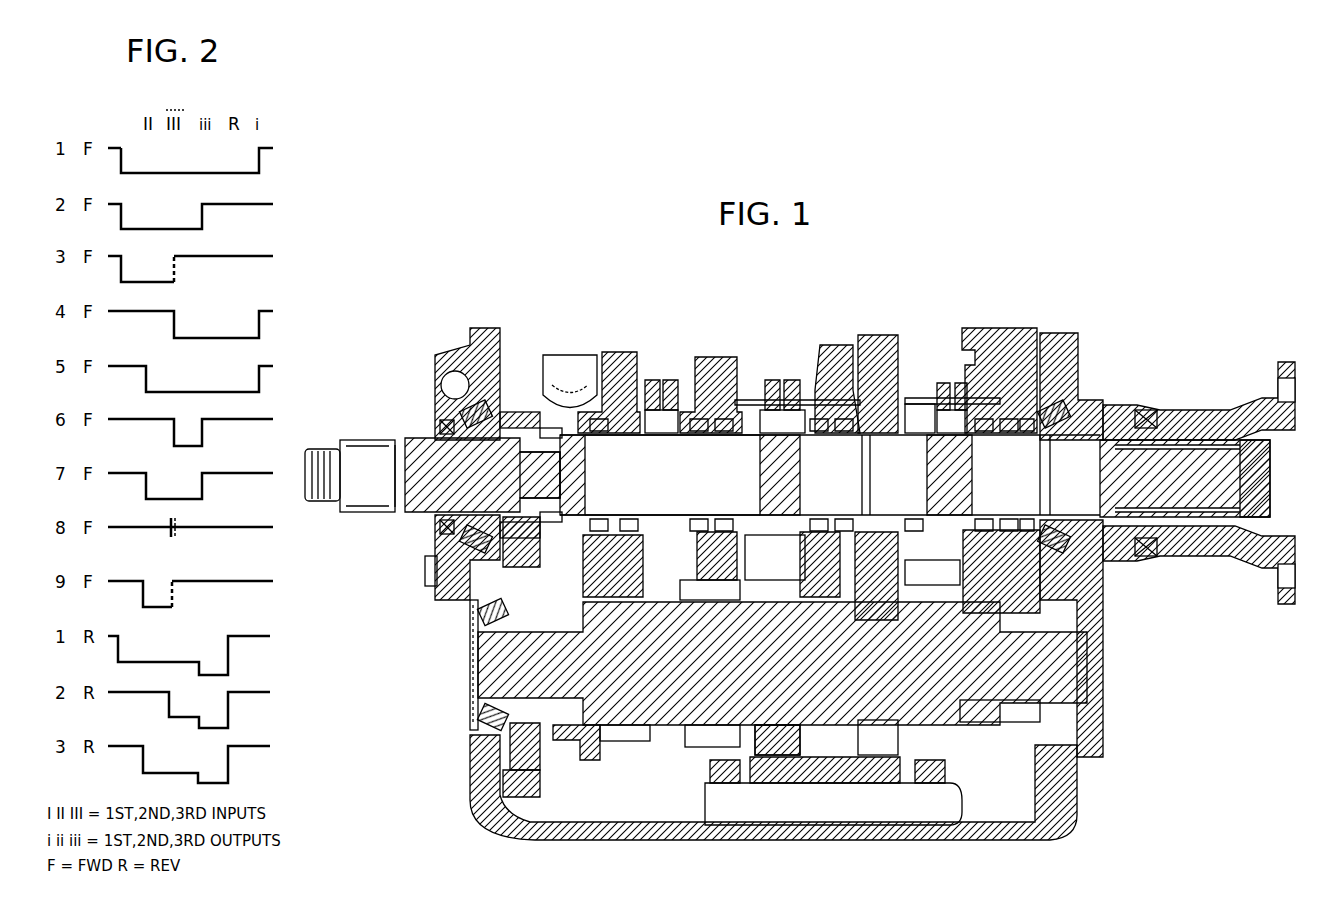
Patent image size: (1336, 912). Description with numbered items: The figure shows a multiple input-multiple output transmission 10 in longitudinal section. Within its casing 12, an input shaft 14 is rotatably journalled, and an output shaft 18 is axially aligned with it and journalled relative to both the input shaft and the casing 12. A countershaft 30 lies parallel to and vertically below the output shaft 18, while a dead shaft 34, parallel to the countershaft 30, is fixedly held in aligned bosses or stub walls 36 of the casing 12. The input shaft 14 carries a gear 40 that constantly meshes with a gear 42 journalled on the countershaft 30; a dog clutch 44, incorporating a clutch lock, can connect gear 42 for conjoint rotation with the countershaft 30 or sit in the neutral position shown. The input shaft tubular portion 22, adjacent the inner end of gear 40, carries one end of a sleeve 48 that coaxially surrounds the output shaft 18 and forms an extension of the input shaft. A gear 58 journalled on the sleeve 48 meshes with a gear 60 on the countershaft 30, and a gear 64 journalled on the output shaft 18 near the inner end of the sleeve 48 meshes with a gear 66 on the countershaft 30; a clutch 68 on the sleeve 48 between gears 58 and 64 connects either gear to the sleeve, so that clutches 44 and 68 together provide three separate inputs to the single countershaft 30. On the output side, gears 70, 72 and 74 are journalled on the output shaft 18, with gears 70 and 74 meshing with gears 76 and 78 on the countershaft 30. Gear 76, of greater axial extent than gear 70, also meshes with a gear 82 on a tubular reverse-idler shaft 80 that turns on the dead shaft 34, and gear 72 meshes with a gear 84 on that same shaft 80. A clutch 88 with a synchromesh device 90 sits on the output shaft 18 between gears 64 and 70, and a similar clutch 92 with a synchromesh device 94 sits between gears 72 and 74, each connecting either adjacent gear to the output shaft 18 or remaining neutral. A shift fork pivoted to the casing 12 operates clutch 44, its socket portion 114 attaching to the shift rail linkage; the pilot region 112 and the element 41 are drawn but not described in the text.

In FIG. 1, the transmission 10 is at (1151, 801).
In FIG. 1, the casing 12 is at (500, 826).
In FIG. 1, the input shaft 14 is at (372, 455).
In FIG. 1, the output shaft 18 is at (1176, 458).
In FIG. 1, the input shaft tubular portion 22 is at (548, 460).
In FIG. 1, the countershaft 30 is at (478, 660).
In FIG. 1, the dead shaft 34 is at (773, 813).
In FIG. 1, the stub walls 36 is at (712, 777).
In FIG. 1, the gear 40 is at (510, 412).
In FIG. 1, the bearing 41 is at (470, 600).
In FIG. 1, the gear 42 is at (528, 797).
In FIG. 2, the clutch 44 is at (122, 112).
In FIG. 1, the clutch 44 is at (582, 738).
In FIG. 1, the sleeve 48 is at (614, 437).
In FIG. 1, the gear 58 is at (615, 356).
In FIG. 1, the gear 60 is at (624, 742).
In FIG. 1, the gear 64 is at (716, 360).
In FIG. 1, the gear 66 is at (700, 737).
In FIG. 2, the clutch 68 is at (173, 131).
In FIG. 1, the clutch 68 is at (658, 385).
In FIG. 1, the gear 70 is at (826, 347).
In FIG. 1, the gear 72 is at (880, 337).
In FIG. 1, the gear 74 is at (1000, 333).
In FIG. 1, the gear 76 is at (818, 728).
In FIG. 1, the gear 78 is at (1003, 712).
In FIG. 1, the reverse-idler shaft 80 is at (836, 775).
In FIG. 1, the gear 82 is at (745, 722).
In FIG. 1, the gear 84 is at (900, 742).
In FIG. 2, the clutch 88 is at (183, 103).
In FIG. 1, the clutch 88 is at (772, 390).
In FIG. 1, the synchromesh device 90 is at (745, 400).
In FIG. 2, the clutch 92 is at (258, 131).
In FIG. 1, the clutch 92 is at (948, 390).
In FIG. 1, the synchromesh device 94 is at (917, 397).
In FIG. 1, the pilot bore 112 is at (590, 518).
In FIG. 1, the socket portion 114 is at (545, 372).